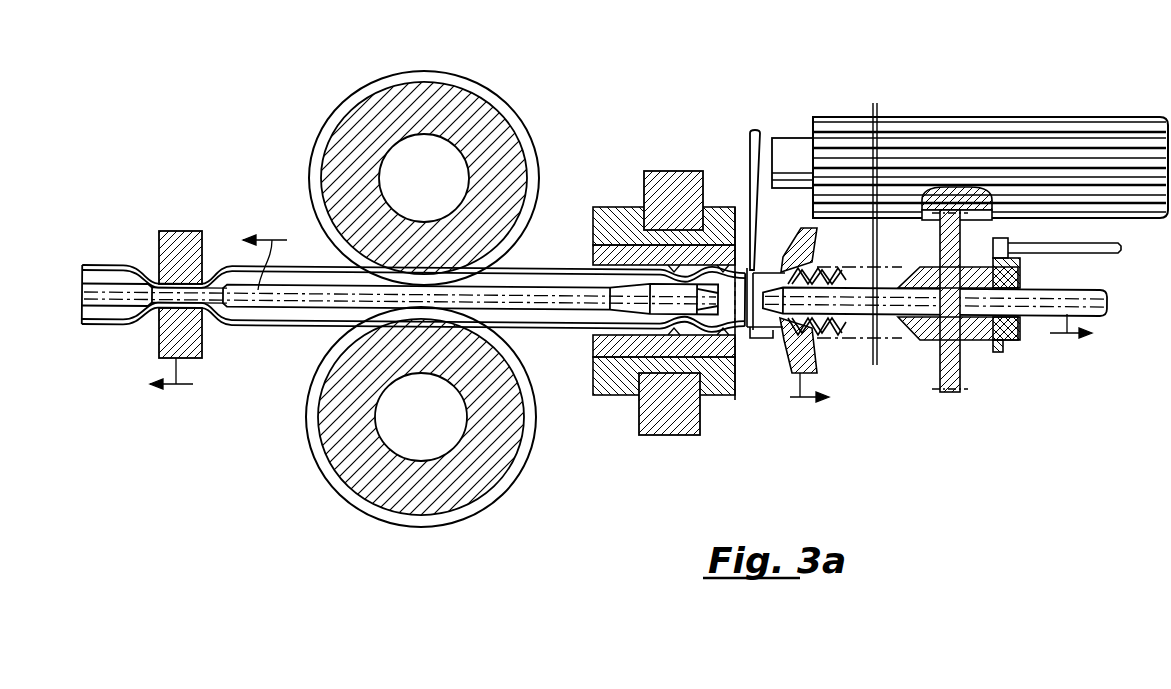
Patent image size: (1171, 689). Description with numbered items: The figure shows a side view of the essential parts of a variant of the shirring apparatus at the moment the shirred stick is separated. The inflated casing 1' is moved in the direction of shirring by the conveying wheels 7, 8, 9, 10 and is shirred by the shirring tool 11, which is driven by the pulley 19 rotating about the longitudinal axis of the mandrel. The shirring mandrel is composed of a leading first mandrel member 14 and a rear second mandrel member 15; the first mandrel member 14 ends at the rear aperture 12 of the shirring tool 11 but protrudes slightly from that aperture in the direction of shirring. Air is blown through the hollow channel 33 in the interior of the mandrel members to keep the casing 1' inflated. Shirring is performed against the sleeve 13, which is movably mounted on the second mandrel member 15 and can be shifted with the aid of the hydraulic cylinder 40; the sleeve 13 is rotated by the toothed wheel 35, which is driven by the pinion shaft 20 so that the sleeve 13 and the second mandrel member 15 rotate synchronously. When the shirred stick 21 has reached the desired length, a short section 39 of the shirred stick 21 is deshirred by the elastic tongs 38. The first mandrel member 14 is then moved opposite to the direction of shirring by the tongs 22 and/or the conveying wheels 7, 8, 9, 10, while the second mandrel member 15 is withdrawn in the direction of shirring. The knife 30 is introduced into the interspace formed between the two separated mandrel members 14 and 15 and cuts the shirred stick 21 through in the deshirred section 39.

The inflated casing 1' is at (413, 301).
The conveying wheel 7 is at (445, 178).
The conveying wheel 9 is at (482, 120).
The conveying wheel 8 is at (450, 417).
The conveying wheel 10 is at (482, 476).
The shirring tool 11 is at (740, 366).
The rear aperture 12 is at (750, 292).
The annular sleeve 13 is at (982, 341).
The first mandrel member 14 is at (108, 303).
The second mandrel member 15 is at (886, 318).
The pulley 19 is at (611, 395).
The pinion shaft 20 is at (1006, 125).
The shirred stick 21 is at (899, 263).
The tongs 22 is at (178, 240).
The knife 30 is at (750, 148).
The hollow channel 33 is at (247, 302).
The toothed wheel 35 is at (948, 395).
The elastic tongs 38 is at (801, 238).
The deshirred section 39 is at (756, 340).
The hydraulic cylinder 40 is at (1106, 254).